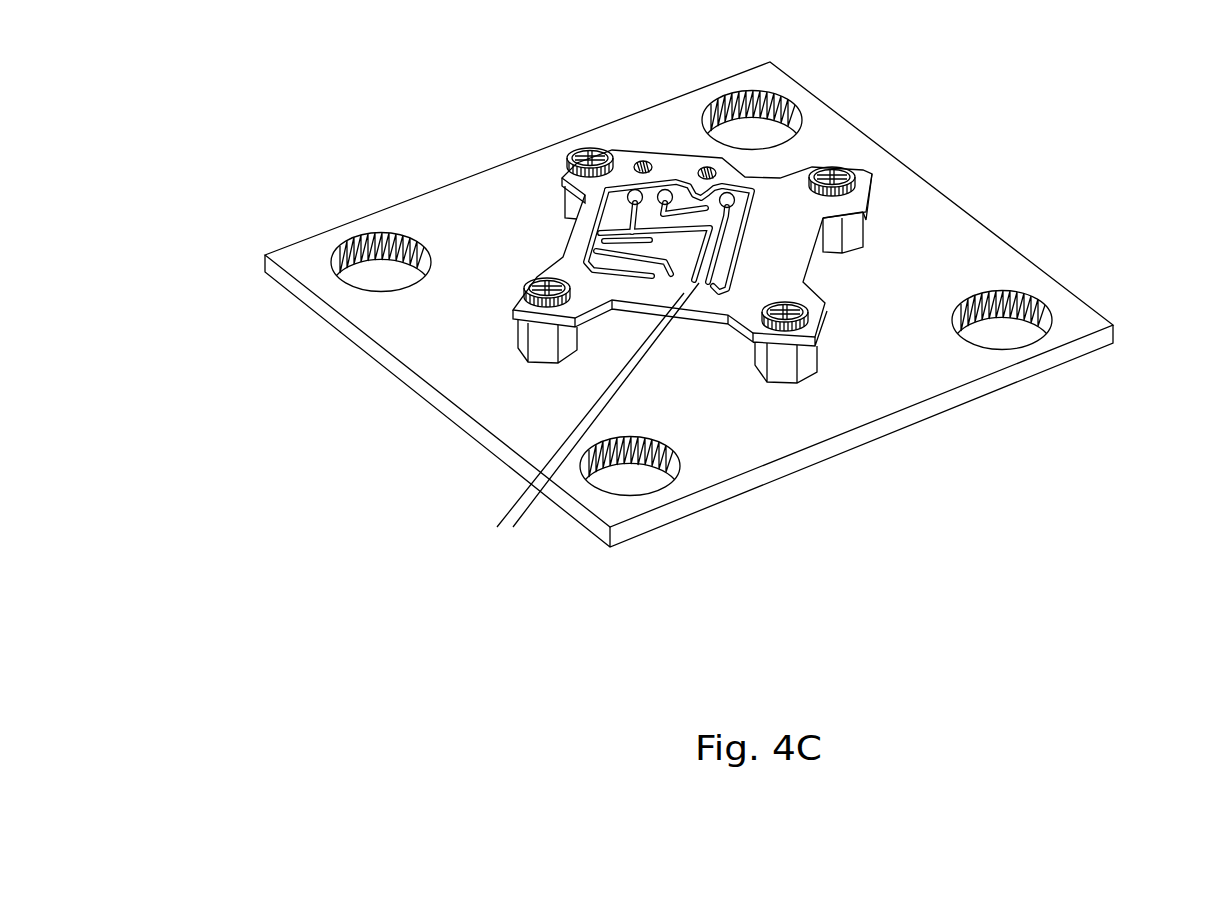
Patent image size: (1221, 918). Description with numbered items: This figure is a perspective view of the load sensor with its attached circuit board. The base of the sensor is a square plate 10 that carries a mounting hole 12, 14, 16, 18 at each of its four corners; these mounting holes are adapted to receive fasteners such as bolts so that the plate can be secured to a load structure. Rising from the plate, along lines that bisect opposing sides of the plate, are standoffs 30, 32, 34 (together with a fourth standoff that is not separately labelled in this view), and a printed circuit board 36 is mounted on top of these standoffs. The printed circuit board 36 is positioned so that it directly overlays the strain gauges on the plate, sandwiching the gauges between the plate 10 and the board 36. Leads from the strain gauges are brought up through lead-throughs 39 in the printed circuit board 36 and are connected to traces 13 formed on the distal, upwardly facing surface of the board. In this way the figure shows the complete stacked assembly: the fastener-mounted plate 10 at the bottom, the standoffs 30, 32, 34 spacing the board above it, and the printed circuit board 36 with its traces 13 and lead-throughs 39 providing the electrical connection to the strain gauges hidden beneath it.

The square plate 10 is at (475, 223).
The mounting hole 12 is at (750, 128).
The traces 13 is at (590, 240).
The mounting hole 14 is at (375, 272).
The mounting hole 16 is at (632, 470).
The mounting hole 18 is at (1003, 327).
The standoff 30 is at (775, 280).
The standoff 32 is at (543, 340).
The standoff 34 is at (787, 360).
The printed circuit board 36 is at (853, 225).
The lead-throughs 39 is at (497, 527).